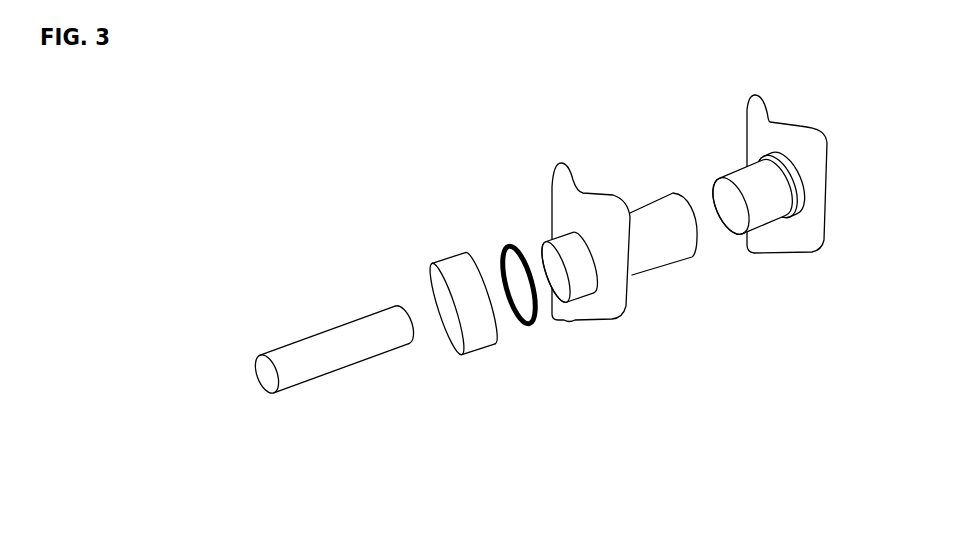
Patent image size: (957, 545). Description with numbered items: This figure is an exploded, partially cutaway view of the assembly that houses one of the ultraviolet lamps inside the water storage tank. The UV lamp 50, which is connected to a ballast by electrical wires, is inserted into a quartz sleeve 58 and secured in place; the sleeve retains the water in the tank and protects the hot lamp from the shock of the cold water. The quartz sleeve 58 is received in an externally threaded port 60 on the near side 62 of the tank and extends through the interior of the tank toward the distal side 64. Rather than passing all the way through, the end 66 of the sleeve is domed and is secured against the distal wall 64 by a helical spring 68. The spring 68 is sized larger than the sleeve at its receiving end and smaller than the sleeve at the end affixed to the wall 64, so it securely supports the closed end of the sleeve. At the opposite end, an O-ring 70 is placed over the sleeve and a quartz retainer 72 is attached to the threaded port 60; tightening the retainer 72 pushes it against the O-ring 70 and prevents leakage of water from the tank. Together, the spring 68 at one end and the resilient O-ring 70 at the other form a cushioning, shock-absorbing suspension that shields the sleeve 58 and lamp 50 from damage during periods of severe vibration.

The UV lamp 50 is at (352, 368).
The quartz sleeve 58 is at (740, 240).
The port 60 is at (580, 277).
The near side 62 is at (562, 183).
The distal side 64 is at (755, 110).
The end 66 is at (768, 168).
The spring 68 is at (793, 217).
The O-ring 70 is at (535, 327).
The quartz retainer 72 is at (487, 347).